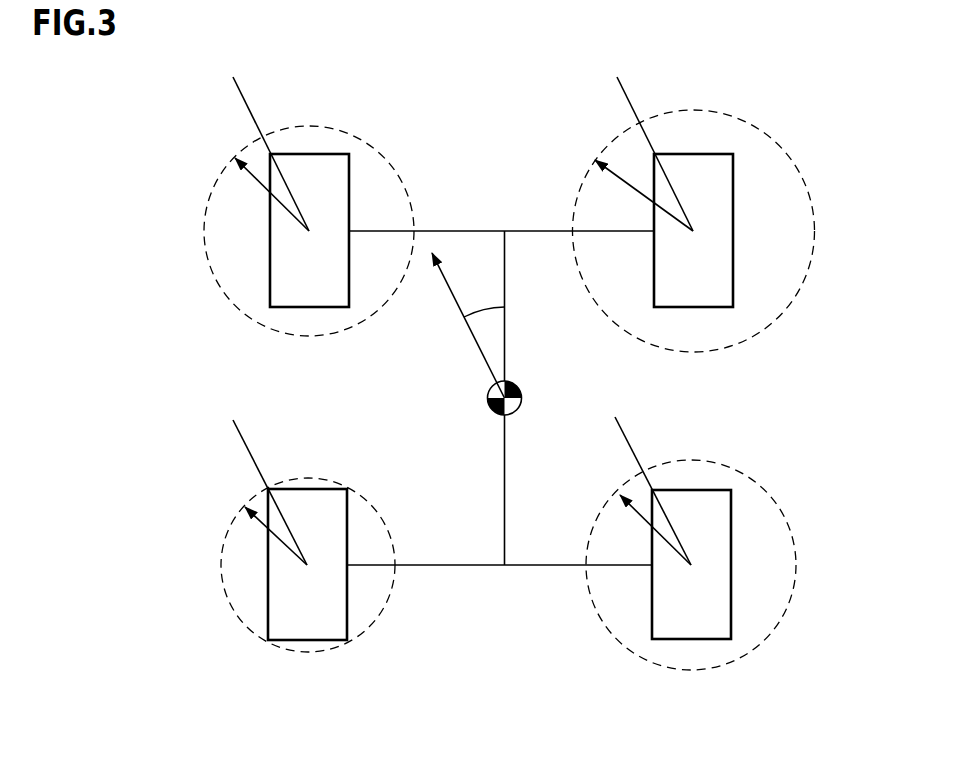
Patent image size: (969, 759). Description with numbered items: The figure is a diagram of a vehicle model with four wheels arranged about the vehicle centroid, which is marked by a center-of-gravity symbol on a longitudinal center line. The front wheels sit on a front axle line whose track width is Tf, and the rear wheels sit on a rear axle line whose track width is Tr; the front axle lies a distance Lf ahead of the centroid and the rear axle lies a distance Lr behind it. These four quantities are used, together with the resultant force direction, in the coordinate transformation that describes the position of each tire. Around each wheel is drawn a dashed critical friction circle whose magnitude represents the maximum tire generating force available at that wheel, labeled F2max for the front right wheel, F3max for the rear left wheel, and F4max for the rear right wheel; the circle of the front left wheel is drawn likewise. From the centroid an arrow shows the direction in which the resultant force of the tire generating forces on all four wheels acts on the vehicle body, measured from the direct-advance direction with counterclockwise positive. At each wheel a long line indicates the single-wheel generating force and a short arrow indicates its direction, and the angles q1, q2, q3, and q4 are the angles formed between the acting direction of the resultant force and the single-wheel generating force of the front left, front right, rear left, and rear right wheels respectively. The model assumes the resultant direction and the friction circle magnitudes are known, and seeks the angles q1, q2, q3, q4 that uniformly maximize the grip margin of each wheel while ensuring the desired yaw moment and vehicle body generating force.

The tire generating force direction angle of front left wheel q1 is at (305, 206).
The tire generating force direction angle of front right wheel q2 is at (648, 192).
The tire generating force direction angle of rear left wheel q3 is at (283, 530).
The tire generating force direction angle of rear right wheel q4 is at (662, 528).
The critical friction circle magnitude of front right wheel F2max is at (694, 214).
The critical friction circle magnitude of rear left wheel F3max is at (308, 585).
The critical friction circle magnitude of rear right wheel F4max is at (691, 583).
The front track width Tf is at (507, 187).
The rear track width Tr is at (504, 617).
The distance from centroid to front axle Lf is at (544, 309).
The distance from centroid to rear axle Lr is at (541, 509).